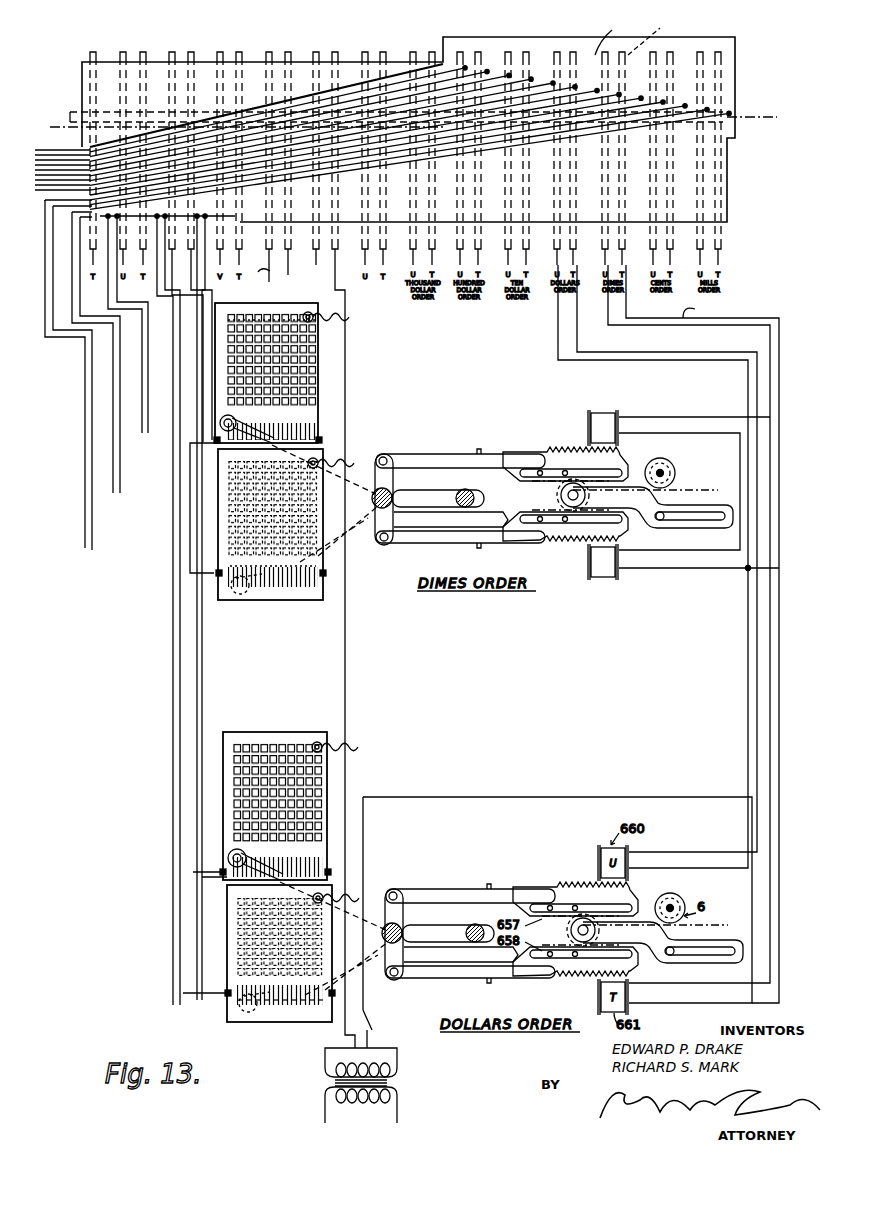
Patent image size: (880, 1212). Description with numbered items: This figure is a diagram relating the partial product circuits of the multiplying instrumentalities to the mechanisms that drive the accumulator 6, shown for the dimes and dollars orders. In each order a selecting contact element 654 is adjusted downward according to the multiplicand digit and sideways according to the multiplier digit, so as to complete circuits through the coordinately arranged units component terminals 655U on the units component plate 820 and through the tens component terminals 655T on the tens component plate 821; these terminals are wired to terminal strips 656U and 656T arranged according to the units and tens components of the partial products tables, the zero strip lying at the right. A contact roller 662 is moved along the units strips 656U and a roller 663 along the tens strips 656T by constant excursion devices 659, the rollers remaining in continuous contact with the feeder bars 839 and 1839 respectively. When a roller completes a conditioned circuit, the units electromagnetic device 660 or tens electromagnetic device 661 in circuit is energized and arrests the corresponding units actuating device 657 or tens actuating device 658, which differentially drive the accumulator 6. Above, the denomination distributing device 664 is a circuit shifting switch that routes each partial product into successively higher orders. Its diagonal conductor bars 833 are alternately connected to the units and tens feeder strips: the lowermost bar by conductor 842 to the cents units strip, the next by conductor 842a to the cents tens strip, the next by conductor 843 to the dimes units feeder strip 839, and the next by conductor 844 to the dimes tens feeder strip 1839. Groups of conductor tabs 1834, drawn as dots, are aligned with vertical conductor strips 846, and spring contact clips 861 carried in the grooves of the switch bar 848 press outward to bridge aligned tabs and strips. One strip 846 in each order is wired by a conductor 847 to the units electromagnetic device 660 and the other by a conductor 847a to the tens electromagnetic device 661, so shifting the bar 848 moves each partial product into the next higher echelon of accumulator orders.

The denomination distributing device 664 is at (79, 106).
The switch bar 848 is at (72, 115).
The conductor bars 833 is at (487, 58).
The conductor tabs 1834 is at (612, 34).
The conductor strips 846 is at (657, 33).
The conductor 843 is at (214, 281).
The conductor 842 is at (258, 285).
The conductor 842a is at (283, 270).
The contact elements 654 is at (311, 312).
The units component terminals 655U is at (313, 379).
The units component plate 820 is at (318, 406).
The contact roller 662 is at (238, 420).
The units terminal strips 656U is at (318, 428).
The feeder bar 839 is at (322, 438).
The conductor 844 is at (190, 528).
The tens component terminals 655T is at (313, 553).
The tens component plate 821 is at (317, 592).
The contact roller 663 is at (236, 594).
The tens terminal strips 656T is at (302, 603).
The units actuating device 657 is at (555, 457).
The tens actuating device 658 is at (560, 536).
The constant excursion devices 659 is at (438, 488).
The electromagnetic device 660 is at (612, 414).
The electromagnetic device 661 is at (610, 573).
The accumulator 6 is at (668, 457).
The spring contact clips 861 is at (676, 469).
The conductor 847 is at (608, 318).
The conductor 847a is at (706, 310).
The feeder strip 1839 is at (212, 580).